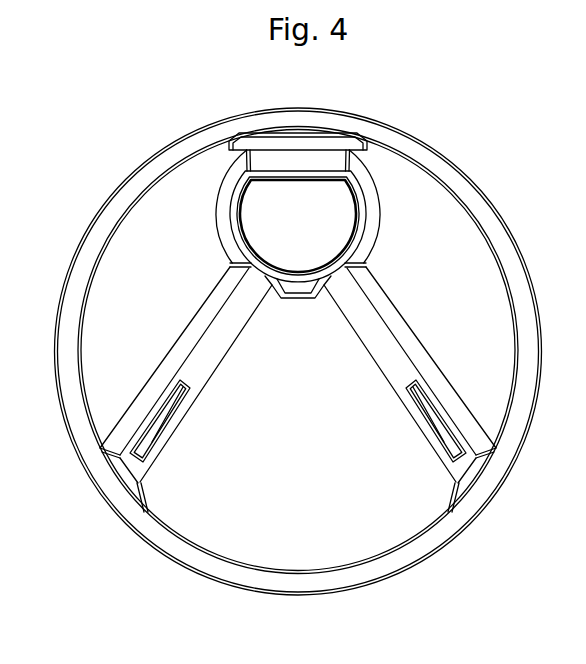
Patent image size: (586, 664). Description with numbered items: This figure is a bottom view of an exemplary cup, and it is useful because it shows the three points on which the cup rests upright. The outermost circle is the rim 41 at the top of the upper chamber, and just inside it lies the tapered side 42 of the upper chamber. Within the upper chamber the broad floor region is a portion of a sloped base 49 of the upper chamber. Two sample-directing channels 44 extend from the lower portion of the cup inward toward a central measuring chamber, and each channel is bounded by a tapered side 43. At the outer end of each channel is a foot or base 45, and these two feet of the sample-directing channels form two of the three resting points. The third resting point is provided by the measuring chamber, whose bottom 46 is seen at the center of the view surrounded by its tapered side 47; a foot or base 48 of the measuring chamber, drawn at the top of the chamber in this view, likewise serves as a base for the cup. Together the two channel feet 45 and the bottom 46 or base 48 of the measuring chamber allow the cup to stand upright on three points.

The rim 41 is at (117, 190).
The tapered side of the upper chamber 42 is at (92, 253).
The tapered side of the channel 43 is at (215, 300).
The sample-directing channel 44 is at (203, 358).
The foot or base of the sample-directing channel 45 is at (155, 445).
The bottom of the measuring chamber 46 is at (307, 221).
The tapered side of the measuring chamber 47 is at (372, 227).
The foot or base of the measuring chamber 48 is at (320, 157).
The sloped base of the upper chamber 49 is at (337, 443).